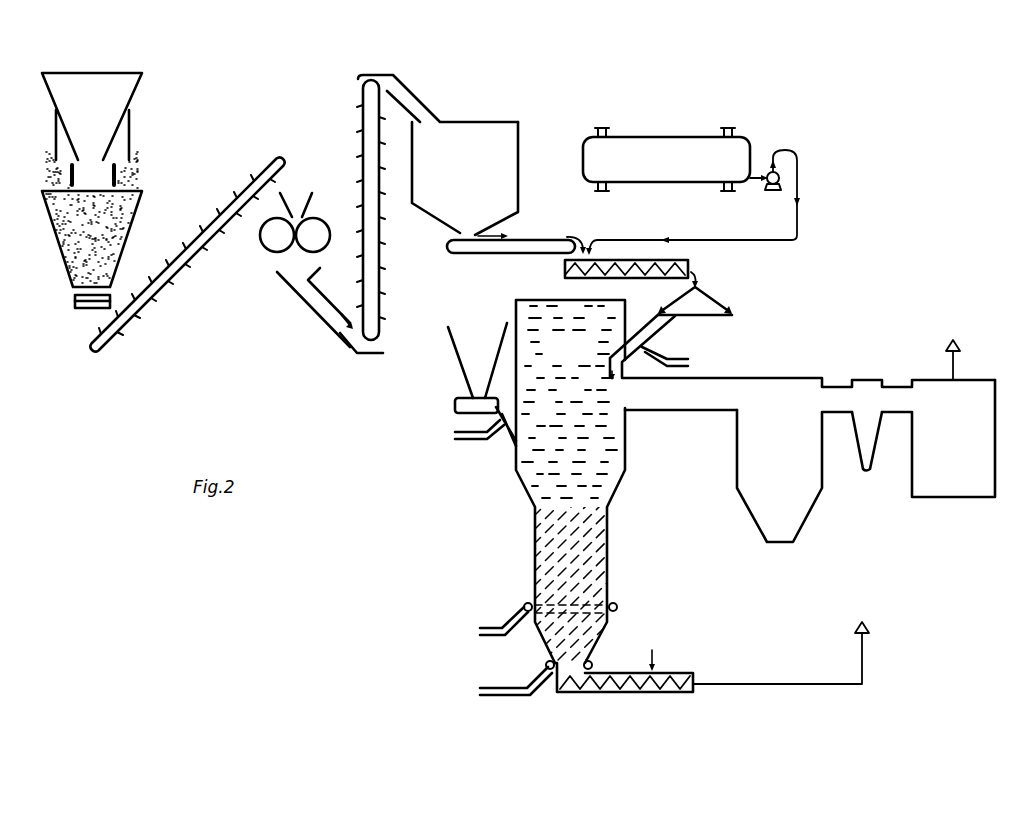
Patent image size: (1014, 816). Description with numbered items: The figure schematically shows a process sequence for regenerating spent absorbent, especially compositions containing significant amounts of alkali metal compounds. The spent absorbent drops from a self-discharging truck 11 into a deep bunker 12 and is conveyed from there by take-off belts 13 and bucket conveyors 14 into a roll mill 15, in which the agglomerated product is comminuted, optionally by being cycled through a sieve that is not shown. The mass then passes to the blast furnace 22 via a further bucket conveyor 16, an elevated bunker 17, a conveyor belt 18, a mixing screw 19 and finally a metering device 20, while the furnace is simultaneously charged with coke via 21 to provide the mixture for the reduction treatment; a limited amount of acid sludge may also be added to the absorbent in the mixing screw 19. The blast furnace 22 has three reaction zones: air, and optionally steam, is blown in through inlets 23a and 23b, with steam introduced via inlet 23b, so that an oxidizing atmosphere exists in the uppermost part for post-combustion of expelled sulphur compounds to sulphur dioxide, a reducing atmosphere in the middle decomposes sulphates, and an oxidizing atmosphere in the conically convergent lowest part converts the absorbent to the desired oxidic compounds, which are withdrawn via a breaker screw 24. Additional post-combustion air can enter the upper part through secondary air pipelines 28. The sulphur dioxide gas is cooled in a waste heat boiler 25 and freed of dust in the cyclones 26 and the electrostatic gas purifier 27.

The self-discharging truck 11 is at (98, 118).
The deep bunker 12 is at (100, 236).
The take-off belts 13 is at (91, 306).
The bucket conveyors 14 is at (190, 271).
The roll mill 15 is at (294, 251).
The further bucket conveyor 16 is at (374, 254).
The elevated bunker 17 is at (468, 176).
The conveyor belt 18 is at (492, 253).
The mixing screw 19 is at (627, 259).
The metering device 20 is at (693, 317).
The coke charging inlet 21 is at (480, 350).
The blast furnace 22 is at (574, 361).
The air inlet 23a is at (479, 691).
The air and steam inlet 23b is at (477, 632).
The breaker screw 24 is at (632, 693).
The waste heat boiler 25 is at (790, 434).
The cyclones 26 is at (875, 434).
The electrostatic gas purifier 27 is at (958, 434).
The secondary air pipelines 28 is at (456, 437).